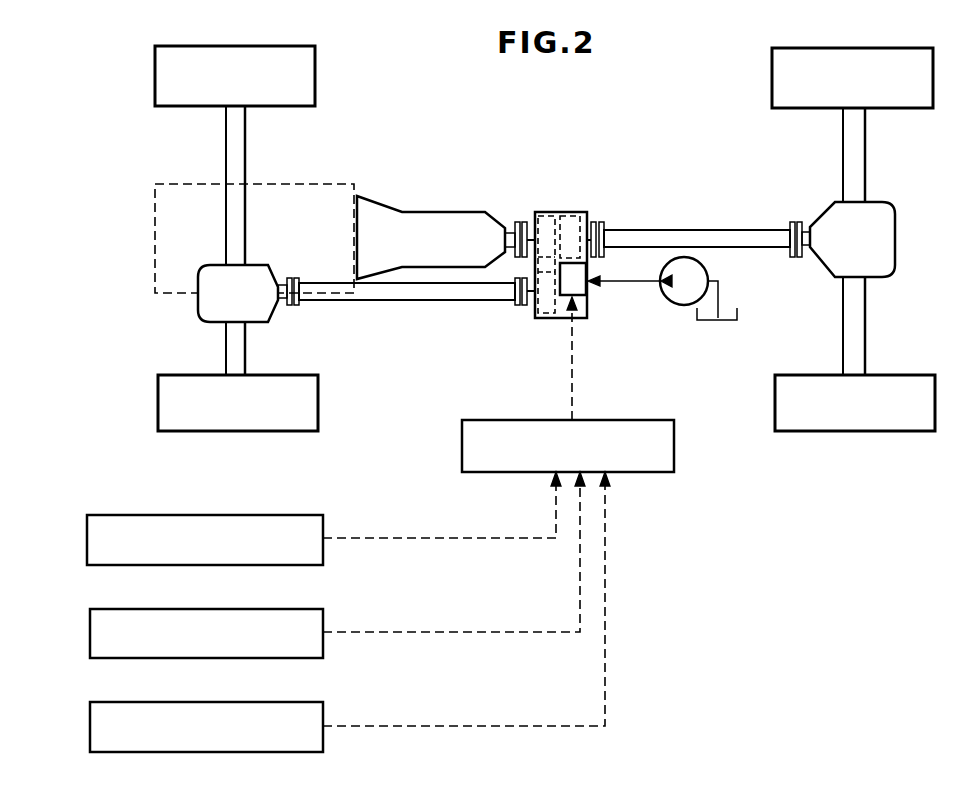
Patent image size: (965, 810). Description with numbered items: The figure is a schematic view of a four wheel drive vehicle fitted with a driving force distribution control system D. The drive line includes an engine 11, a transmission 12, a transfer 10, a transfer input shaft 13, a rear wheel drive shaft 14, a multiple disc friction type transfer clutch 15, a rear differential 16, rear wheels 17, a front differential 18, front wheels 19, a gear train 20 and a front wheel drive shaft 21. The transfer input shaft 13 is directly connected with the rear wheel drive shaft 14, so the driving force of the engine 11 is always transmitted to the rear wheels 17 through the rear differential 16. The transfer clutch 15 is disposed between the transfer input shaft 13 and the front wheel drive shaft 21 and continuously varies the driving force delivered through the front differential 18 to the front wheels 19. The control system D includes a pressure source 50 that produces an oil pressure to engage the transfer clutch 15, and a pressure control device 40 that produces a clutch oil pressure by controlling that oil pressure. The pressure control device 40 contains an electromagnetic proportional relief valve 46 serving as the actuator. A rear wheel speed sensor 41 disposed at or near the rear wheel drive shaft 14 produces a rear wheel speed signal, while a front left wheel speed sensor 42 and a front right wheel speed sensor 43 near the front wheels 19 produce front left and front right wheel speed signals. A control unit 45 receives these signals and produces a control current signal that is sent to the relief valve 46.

The transfer 10 is at (544, 212).
The engine 11 is at (306, 184).
The transmission 12 is at (445, 212).
The transfer input shaft 13 is at (509, 222).
The rear wheel drive shaft 14 is at (703, 230).
The transfer clutch 15 is at (571, 216).
The rear differential 16 is at (893, 212).
The rear wheels 17 is at (922, 108).
The front differential 18 is at (198, 317).
The front wheels 19 is at (155, 71).
The gear train 20 is at (545, 318).
The front wheel drive shaft 21 is at (425, 300).
The pressure control device 40 is at (568, 384).
The rear wheel speed sensor 41 is at (306, 515).
The front left wheel speed sensor 42 is at (305, 609).
The front right wheel speed sensor 43 is at (305, 702).
The control unit 45 is at (652, 420).
The electromagnetic proportional relief valve 46 is at (593, 294).
The pressure source 50 is at (698, 361).
The driving force distribution control system D is at (388, 443).